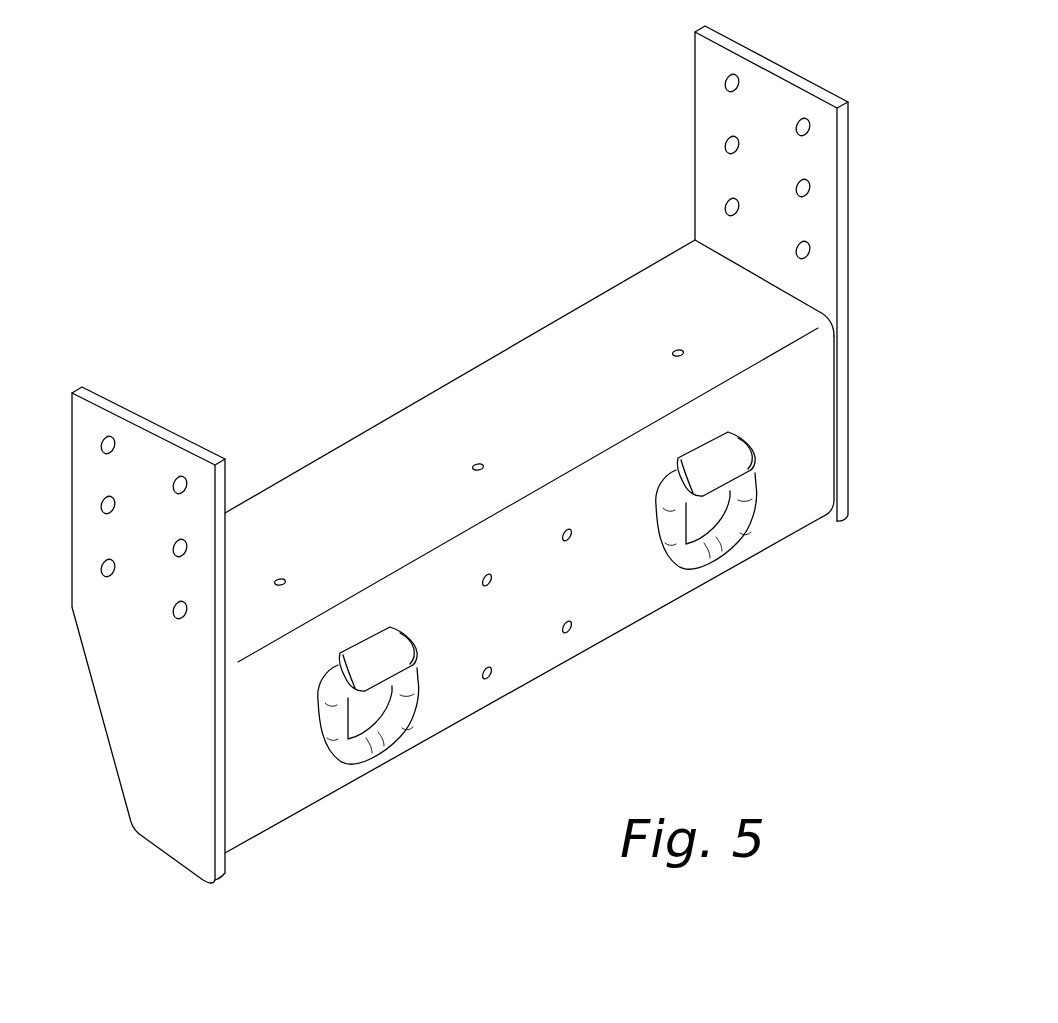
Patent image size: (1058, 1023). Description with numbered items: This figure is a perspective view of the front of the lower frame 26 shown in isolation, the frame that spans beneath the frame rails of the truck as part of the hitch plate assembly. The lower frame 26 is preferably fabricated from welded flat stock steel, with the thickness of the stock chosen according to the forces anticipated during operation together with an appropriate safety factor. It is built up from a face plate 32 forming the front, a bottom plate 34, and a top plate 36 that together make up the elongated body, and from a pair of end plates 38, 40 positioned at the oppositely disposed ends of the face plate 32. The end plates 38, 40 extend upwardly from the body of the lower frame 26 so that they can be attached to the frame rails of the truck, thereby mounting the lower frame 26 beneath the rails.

The lower frame 26 is at (274, 368).
The face plate 32 is at (627, 598).
The bottom plate 34 is at (303, 813).
The top plate 36 is at (452, 428).
The end plate 38 is at (122, 707).
The end plate 40 is at (850, 167).